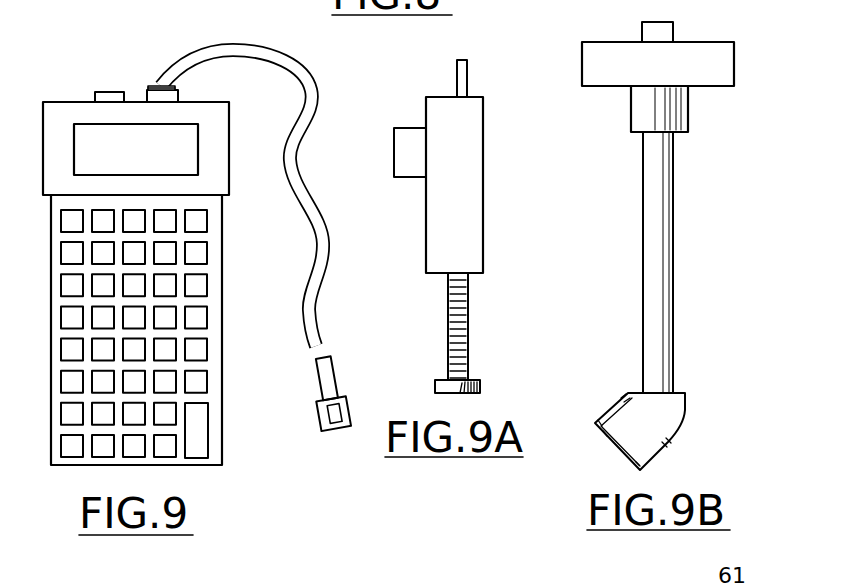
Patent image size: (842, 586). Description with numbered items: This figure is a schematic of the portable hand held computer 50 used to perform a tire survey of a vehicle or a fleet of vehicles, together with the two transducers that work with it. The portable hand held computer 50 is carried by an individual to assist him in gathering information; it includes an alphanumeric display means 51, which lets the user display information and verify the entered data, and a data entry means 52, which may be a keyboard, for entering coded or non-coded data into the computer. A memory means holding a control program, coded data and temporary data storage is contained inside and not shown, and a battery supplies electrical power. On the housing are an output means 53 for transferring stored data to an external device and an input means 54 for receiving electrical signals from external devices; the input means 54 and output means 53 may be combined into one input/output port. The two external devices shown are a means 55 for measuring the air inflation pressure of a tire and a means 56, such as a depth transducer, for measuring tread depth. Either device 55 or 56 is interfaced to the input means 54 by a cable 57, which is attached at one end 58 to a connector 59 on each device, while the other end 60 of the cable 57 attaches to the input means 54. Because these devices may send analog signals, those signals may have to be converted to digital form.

In FIG. 9, the portable hand held computer 50 is at (241, 422).
In FIG. 9, the alphanumeric display means 51 is at (190, 158).
In FIG. 9, the data entry means 52 is at (205, 272).
In FIG. 9, the output means 53 is at (148, 100).
In FIG. 9, the input means 54 is at (103, 96).
In FIG. 9B, the means for measuring air inflation pressure 55 is at (694, 186).
In FIG. 9A, the depth transducer 56 is at (492, 162).
In FIG. 9, the cable 57 is at (308, 108).
In FIG. 9, the cable end 58 is at (321, 412).
In FIG. 9A, the connector 59 is at (413, 140).
In FIG. 9B, the connector 59 is at (663, 38).
In FIG. 9, the other end of cable 60 is at (152, 84).